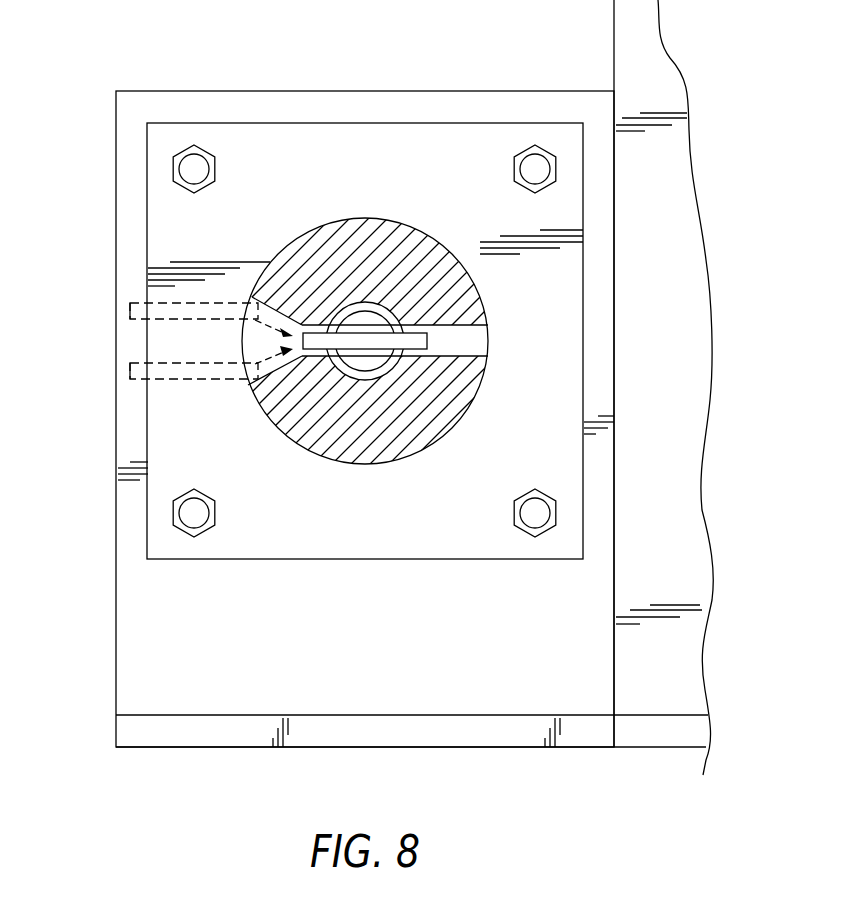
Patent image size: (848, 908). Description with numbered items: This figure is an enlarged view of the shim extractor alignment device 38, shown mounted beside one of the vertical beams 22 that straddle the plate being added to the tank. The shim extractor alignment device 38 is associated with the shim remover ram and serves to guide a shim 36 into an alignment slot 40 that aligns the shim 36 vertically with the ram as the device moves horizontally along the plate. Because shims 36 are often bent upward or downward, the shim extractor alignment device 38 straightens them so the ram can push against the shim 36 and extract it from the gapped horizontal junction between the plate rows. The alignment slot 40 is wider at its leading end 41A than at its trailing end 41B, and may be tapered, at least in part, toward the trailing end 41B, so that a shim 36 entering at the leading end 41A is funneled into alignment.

The vertical beam 22 is at (682, 243).
The shim 36 is at (130, 311).
The shim extractor alignment device 38 is at (307, 228).
The alignment slot 40 is at (365, 435).
The leading end 41A is at (250, 386).
The trailing end 41B is at (488, 358).